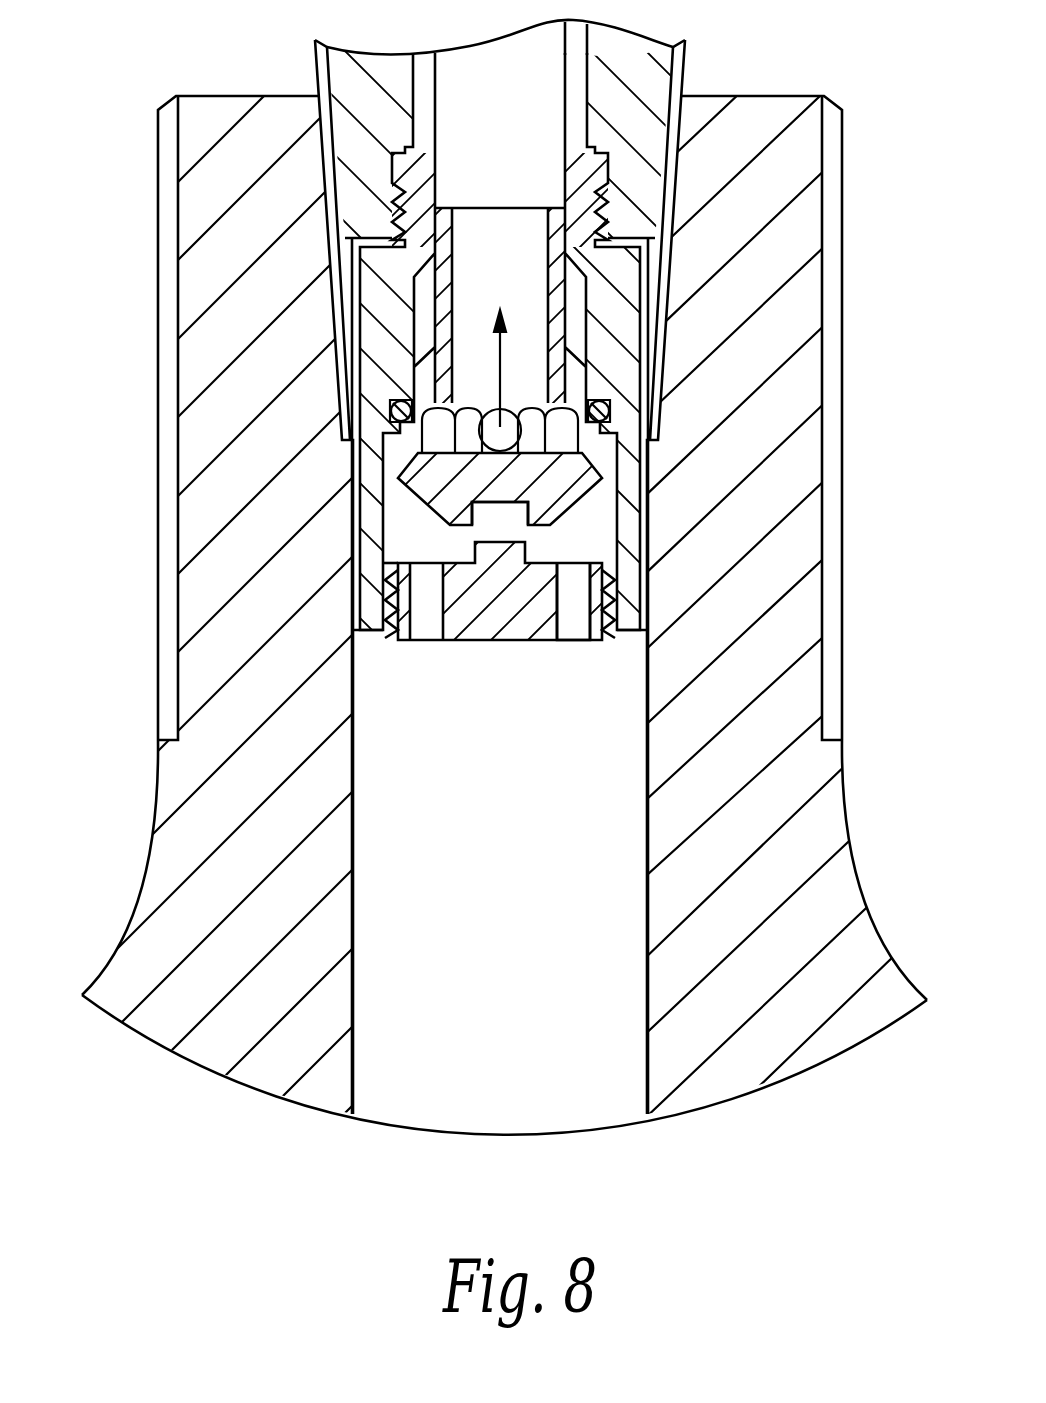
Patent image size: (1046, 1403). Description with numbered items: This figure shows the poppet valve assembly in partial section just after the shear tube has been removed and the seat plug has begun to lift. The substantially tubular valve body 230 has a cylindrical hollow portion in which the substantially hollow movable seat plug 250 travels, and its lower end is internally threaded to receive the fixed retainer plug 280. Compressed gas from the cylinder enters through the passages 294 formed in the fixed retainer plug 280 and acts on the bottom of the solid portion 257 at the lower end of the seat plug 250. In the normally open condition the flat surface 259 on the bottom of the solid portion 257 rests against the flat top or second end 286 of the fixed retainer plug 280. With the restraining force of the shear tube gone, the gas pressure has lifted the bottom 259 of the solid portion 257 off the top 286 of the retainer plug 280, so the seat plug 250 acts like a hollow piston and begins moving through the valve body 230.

The substantially tubular valve body 230 is at (628, 373).
The substantially hollow movable seat plug 250 is at (447, 265).
The solid portion 257 is at (432, 492).
The flat surface 259 is at (537, 523).
The fixed retainer plug 280 is at (478, 642).
The second end of the fixed retainer plug 286 is at (397, 557).
The passages 294 is at (575, 632).